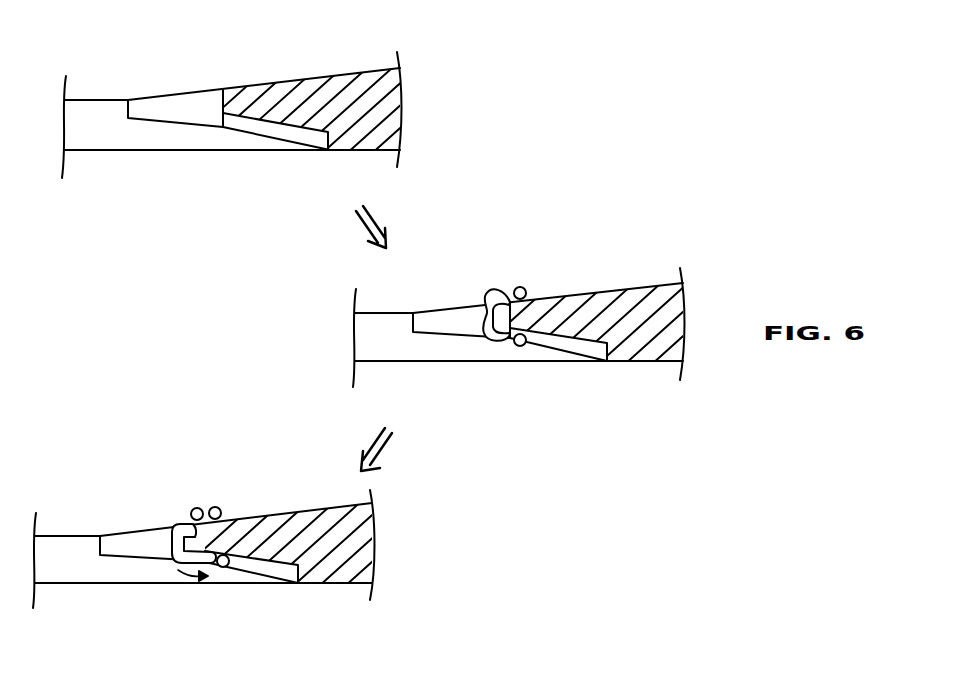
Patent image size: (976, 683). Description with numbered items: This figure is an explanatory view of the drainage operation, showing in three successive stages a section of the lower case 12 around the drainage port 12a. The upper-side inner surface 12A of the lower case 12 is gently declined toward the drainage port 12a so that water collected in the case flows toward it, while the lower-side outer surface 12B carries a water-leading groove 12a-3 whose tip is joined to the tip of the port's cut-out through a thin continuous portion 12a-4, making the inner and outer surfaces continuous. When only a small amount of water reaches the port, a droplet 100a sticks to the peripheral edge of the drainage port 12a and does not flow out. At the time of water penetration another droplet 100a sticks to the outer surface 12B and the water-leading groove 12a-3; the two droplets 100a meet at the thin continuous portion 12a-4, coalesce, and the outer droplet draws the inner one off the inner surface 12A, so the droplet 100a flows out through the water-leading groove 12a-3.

The lower case 12 is at (355, 116).
The drainage port 12a is at (102, 125).
The inner surface 12A is at (372, 68).
The lower-side outer surface 12B is at (387, 150).
The water-leading groove 12a-3 is at (272, 135).
The thin continuous portion 12a-4 is at (223, 87).
The droplet 100a is at (520, 288).